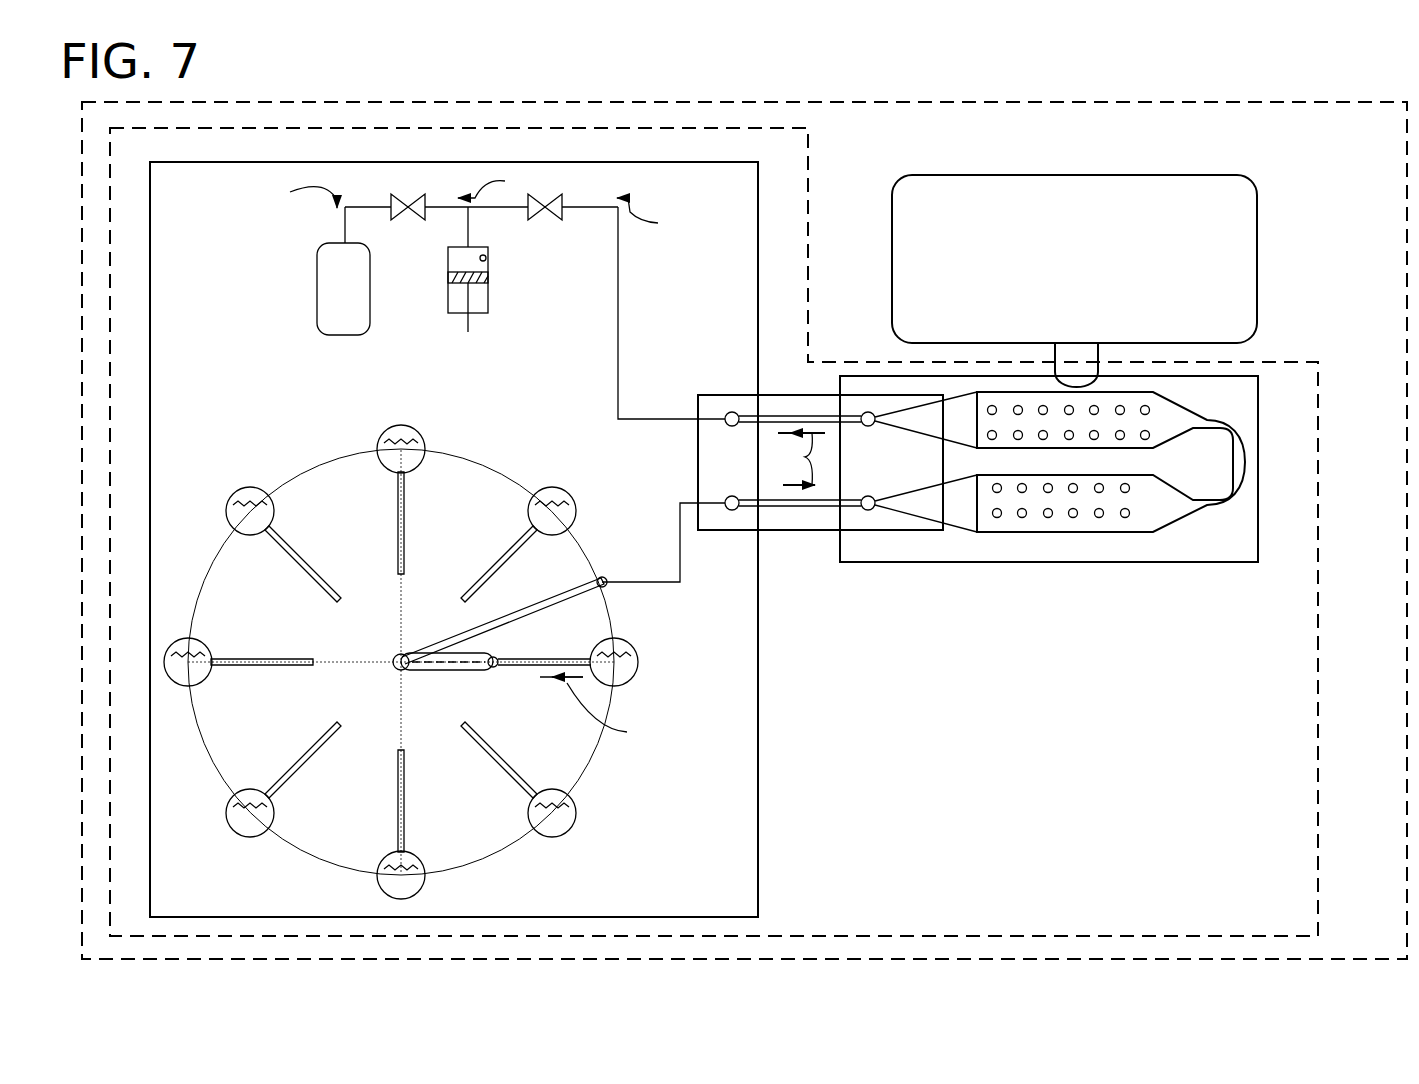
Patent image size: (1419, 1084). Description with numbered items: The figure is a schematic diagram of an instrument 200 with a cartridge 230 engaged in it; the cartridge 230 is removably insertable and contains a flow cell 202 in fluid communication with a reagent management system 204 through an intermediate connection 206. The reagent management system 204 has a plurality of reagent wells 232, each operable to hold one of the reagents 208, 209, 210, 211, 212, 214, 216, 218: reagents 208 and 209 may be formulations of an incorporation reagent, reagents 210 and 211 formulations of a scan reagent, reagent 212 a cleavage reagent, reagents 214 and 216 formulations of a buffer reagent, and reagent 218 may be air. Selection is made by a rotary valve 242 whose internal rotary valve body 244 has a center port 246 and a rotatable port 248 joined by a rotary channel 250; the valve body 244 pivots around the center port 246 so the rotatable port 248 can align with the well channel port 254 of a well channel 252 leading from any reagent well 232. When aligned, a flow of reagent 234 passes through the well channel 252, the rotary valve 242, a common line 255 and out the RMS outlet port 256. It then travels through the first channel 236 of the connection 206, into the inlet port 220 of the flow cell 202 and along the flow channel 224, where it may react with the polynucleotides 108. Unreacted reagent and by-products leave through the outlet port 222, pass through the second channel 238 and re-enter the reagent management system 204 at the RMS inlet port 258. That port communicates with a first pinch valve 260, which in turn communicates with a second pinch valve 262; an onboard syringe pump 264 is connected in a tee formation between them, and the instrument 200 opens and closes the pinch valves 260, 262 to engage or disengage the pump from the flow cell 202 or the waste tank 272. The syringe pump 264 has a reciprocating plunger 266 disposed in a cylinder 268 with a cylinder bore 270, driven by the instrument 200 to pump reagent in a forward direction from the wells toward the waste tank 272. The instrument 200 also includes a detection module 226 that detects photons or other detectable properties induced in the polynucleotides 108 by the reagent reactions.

The instrument 200 is at (772, 92).
The flow cell 202 is at (1051, 510).
The reagent management system 204 is at (772, 844).
The intermediate connection 206 is at (828, 540).
The incorporation reagent 208 is at (401, 449).
The incorporation reagent 209 is at (552, 511).
The scan reagent 210 is at (614, 662).
The scan reagent 211 is at (552, 813).
The cleavage reagent 212 is at (401, 875).
The buffer reagent 214 is at (250, 813).
The buffer reagent 216 is at (188, 662).
The air 218 is at (250, 511).
The inlet port 220 is at (865, 512).
The outlet port 222 is at (866, 427).
The flow channel 224 is at (1178, 402).
The detection module 226 is at (1074, 281).
The cartridge 230 is at (815, 203).
The reagent well 232 is at (401, 647).
The flow of reagent 234 is at (534, 458).
The first channel 236 is at (790, 510).
The second channel 238 is at (780, 417).
The rotary valve 242 is at (441, 684).
The rotary valve body 244 is at (455, 672).
The center port 246 is at (393, 665).
The rotatable port 248 is at (497, 657).
The rotary channel 250 is at (443, 670).
The well channel 252 is at (374, 662).
The well channel port 254 is at (398, 573).
The common line 255 is at (596, 583).
The RMS outlet port 256 is at (725, 501).
The RMS inlet port 258 is at (719, 424).
The first pinch valve 260 is at (548, 215).
The second pinch valve 262 is at (420, 200).
The syringe pump 264 is at (482, 296).
The plunger 266 is at (484, 286).
The cylinder 268 is at (447, 298).
The cylinder bore 270 is at (486, 259).
The waste tank 272 is at (317, 290).
The polynucleotides 108 is at (1128, 487).